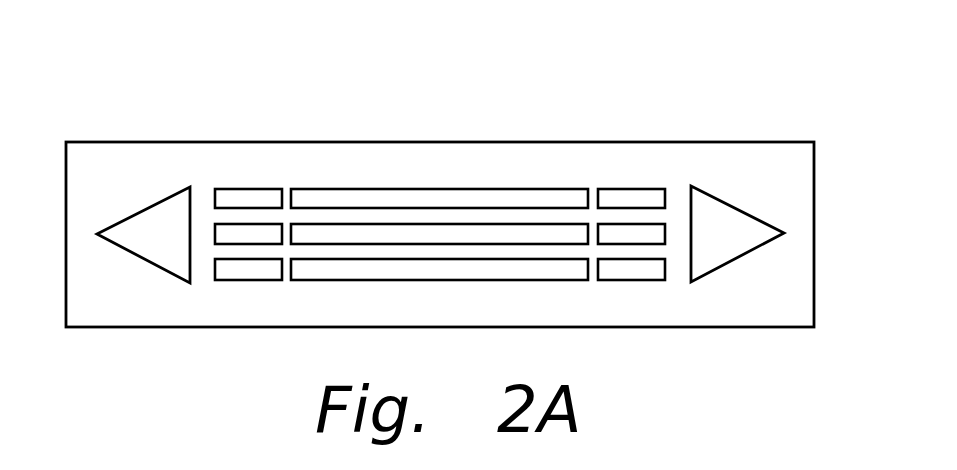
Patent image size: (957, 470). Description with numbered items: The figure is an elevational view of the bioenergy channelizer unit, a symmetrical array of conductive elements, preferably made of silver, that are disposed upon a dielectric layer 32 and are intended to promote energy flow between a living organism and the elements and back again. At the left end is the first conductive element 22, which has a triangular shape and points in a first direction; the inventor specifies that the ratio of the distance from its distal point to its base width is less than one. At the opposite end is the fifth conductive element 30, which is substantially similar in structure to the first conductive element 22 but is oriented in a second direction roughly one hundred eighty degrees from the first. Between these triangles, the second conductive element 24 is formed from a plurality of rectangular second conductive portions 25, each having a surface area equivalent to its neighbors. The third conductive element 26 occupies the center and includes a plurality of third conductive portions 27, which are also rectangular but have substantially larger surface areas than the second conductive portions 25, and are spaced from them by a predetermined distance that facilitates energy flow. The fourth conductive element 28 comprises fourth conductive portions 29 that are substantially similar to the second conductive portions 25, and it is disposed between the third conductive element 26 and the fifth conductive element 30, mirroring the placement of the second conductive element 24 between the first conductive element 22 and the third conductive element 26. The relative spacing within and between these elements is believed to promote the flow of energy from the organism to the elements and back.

The first conductive element 22 is at (164, 215).
The second conductive element 24 is at (238, 152).
The second conductive portions 25 is at (273, 273).
The third conductive element 26 is at (359, 148).
The third conductive portions 27 is at (460, 270).
The fourth conductive element 28 is at (622, 158).
The fourth conductive portions 29 is at (660, 268).
The fifth conductive element 30 is at (732, 237).
The dielectric layer 32 is at (541, 163).